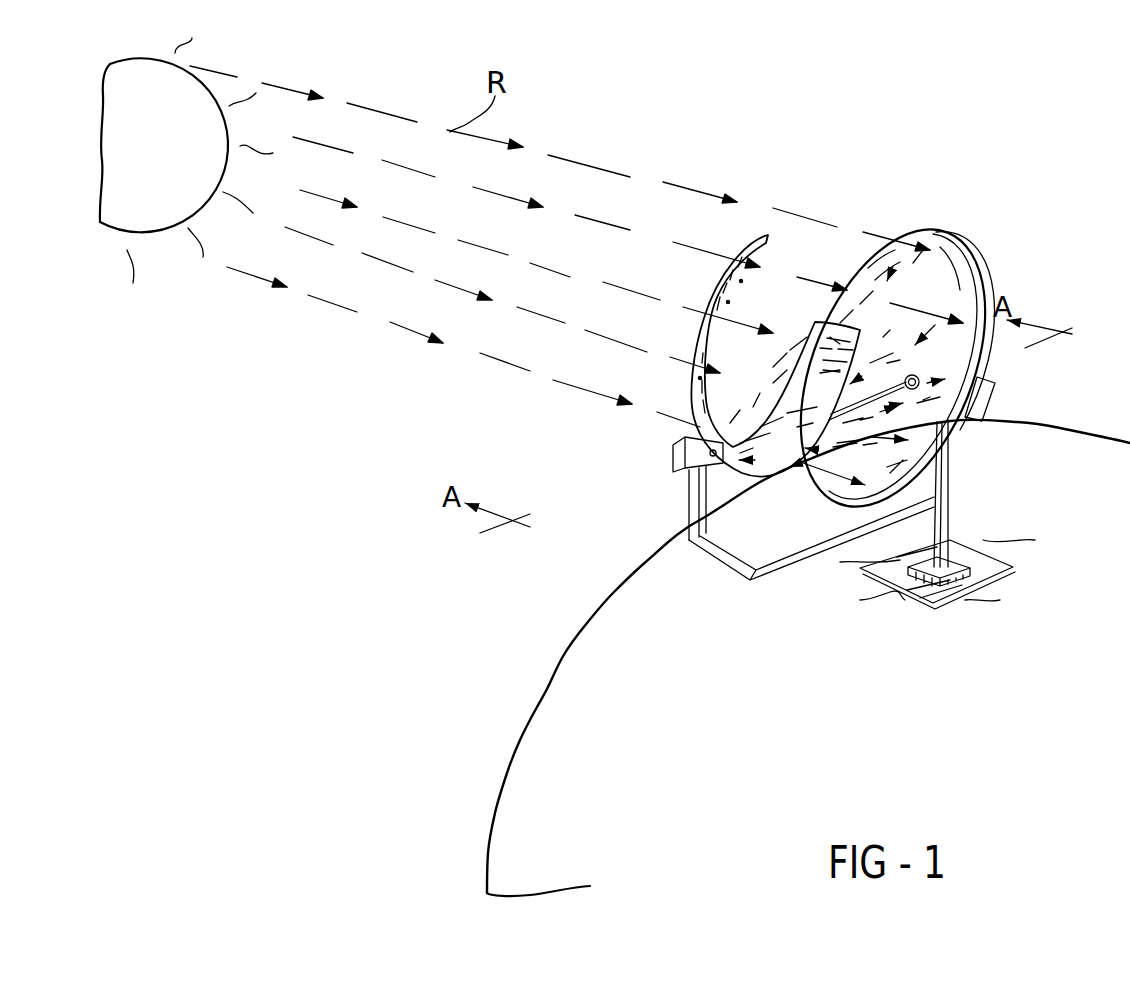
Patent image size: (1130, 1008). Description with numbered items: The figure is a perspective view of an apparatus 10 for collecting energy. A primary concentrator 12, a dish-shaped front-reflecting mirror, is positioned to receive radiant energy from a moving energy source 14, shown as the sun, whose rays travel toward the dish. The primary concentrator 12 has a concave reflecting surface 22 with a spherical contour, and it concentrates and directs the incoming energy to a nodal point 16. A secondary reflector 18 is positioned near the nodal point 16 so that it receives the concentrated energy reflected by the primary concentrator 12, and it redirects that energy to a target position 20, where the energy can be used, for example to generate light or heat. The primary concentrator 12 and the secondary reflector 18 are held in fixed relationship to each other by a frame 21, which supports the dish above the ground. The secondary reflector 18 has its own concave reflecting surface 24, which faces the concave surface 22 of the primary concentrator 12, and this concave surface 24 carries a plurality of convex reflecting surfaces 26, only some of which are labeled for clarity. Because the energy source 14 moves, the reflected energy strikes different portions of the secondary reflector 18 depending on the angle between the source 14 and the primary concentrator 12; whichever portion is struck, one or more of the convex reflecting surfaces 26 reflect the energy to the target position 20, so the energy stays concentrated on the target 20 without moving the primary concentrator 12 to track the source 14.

The apparatus for collecting energy 10 is at (948, 112).
The primary concentrator 12 is at (977, 268).
The moving energy source 14 is at (187, 63).
The nodal point 16 is at (673, 451).
The secondary reflector 18 is at (760, 235).
The target position 20 is at (922, 375).
The frame 21 is at (948, 485).
The concave reflecting surface 22 is at (942, 306).
The concave reflecting surface 24 is at (717, 307).
The convex reflecting surfaces 26 is at (729, 302).